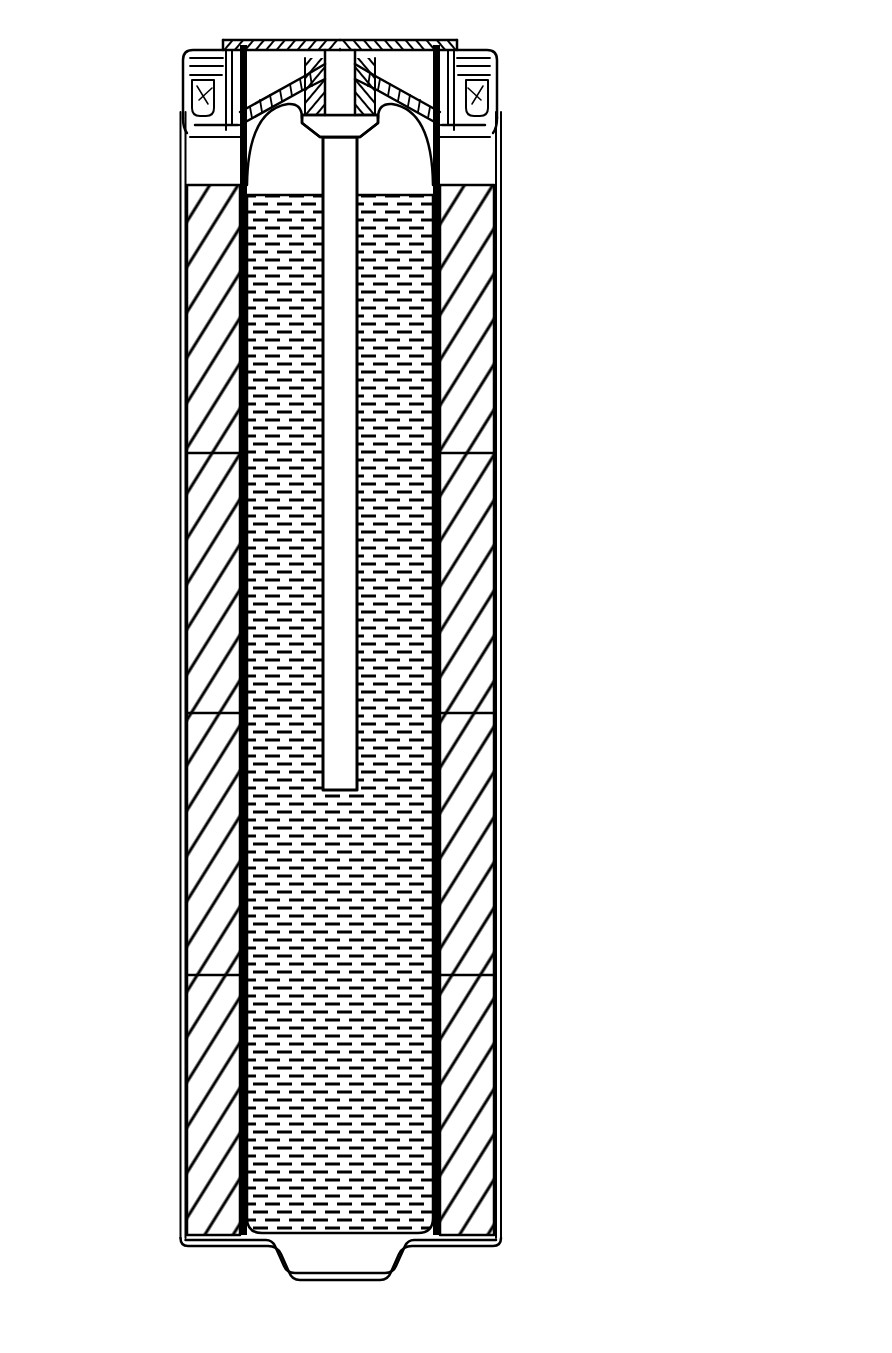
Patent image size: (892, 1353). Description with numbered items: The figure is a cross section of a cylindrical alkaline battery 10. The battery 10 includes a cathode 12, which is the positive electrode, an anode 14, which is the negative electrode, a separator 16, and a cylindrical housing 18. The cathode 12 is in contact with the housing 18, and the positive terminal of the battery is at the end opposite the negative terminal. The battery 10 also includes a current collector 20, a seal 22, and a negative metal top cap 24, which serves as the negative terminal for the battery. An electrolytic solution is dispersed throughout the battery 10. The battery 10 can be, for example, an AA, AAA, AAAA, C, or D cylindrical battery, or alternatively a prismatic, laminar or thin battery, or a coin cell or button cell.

The battery 10 is at (628, 141).
The cathode 12 is at (482, 296).
The anode 14 is at (405, 822).
The separator 16 is at (243, 637).
The cylindrical housing 18 is at (180, 410).
The current collector 20 is at (343, 583).
The seal 22 is at (193, 130).
The negative metal top cap 24 is at (447, 38).